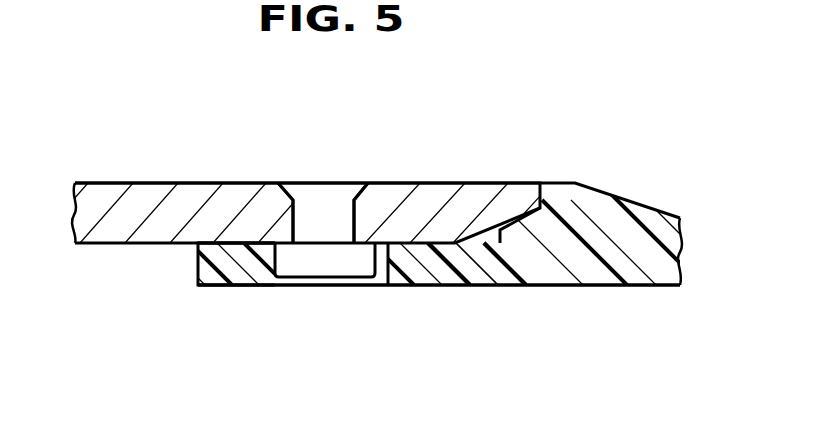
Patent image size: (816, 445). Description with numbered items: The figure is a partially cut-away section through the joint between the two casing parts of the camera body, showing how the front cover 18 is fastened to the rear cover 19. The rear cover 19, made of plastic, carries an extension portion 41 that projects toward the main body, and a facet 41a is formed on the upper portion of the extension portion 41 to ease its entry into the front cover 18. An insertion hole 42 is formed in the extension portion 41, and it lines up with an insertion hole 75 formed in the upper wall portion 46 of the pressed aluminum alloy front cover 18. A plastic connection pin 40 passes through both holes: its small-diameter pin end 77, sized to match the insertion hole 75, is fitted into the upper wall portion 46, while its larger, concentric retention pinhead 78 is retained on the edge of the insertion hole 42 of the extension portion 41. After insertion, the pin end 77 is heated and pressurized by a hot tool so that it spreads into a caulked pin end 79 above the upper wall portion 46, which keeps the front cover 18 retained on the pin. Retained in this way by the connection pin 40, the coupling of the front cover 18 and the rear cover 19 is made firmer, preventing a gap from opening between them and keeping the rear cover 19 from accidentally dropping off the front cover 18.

The front cover 18 is at (82, 183).
The rear cover 19 is at (645, 207).
The connection pin 40 is at (342, 285).
The extension portion 41 is at (233, 272).
The facet 41a is at (200, 251).
The insertion hole 42 is at (395, 260).
The upper wall portion 46 is at (176, 205).
The insertion hole 75 is at (368, 202).
The pin end 77 is at (292, 205).
The retention pinhead 78 is at (310, 268).
The caulked pin end 79 is at (326, 190).